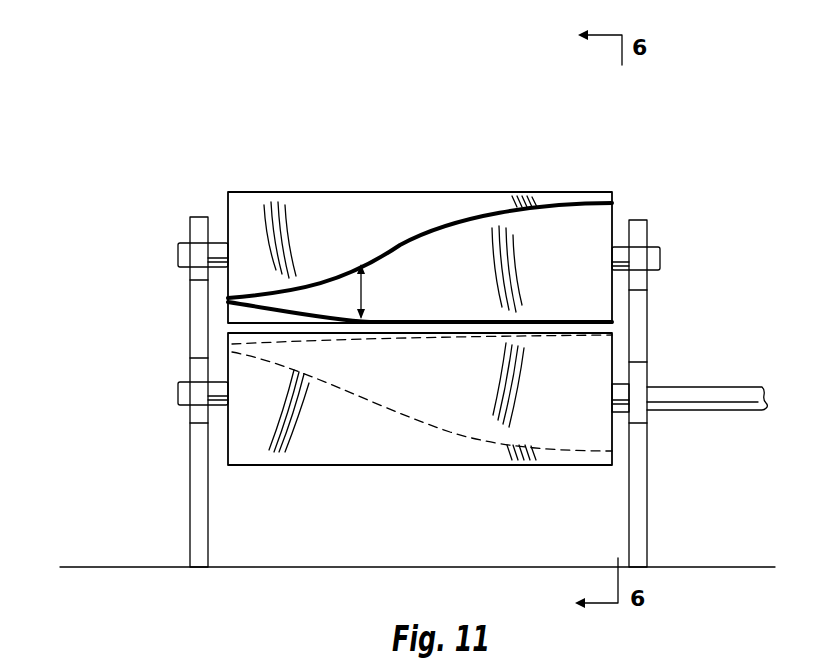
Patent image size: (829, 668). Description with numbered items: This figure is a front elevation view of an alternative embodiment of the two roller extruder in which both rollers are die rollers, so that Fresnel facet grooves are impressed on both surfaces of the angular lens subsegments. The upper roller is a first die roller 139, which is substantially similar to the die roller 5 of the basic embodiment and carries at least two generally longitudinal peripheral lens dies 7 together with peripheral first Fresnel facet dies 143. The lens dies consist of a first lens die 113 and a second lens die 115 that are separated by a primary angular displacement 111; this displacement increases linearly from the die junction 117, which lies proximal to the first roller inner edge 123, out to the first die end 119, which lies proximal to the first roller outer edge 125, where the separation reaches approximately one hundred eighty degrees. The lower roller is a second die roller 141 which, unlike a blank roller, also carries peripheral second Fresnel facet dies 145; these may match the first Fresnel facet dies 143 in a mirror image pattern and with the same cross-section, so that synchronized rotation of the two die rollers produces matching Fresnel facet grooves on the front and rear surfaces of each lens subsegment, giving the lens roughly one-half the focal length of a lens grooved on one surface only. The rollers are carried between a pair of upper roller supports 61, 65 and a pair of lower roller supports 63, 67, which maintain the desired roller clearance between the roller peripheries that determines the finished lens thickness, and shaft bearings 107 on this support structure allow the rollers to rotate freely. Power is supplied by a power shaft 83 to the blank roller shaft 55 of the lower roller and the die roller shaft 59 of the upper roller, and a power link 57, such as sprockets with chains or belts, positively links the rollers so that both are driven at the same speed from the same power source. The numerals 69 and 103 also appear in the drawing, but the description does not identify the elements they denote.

The die roller 5 is at (263, 192).
The peripheral lens dies 7 is at (426, 322).
The blank roller shaft 55 is at (620, 411).
The power link 57 is at (640, 343).
The die roller shaft 59 is at (621, 252).
The upper roller support 61 is at (193, 328).
The lower roller support 63 is at (190, 497).
The upper roller support 65 is at (643, 300).
The lower roller support 67 is at (637, 505).
The fastener 69 is at (228, 203).
The power shaft 83 is at (705, 385).
The side wall 103 is at (228, 193).
The shaft bearings 107 is at (180, 404).
The primary angular displacement 111 is at (345, 260).
The first lens die 113 is at (459, 224).
The second lens die 115 is at (236, 334).
The die junction 117 is at (228, 298).
The first die end 119 is at (612, 200).
The first roller inner edge 123 is at (227, 210).
The first roller outer edge 125 is at (647, 281).
The first die roller 139 is at (555, 193).
The second die roller 141 is at (355, 465).
The first Fresnel facet dies 143 is at (490, 242).
The second Fresnel facet dies 145 is at (500, 380).